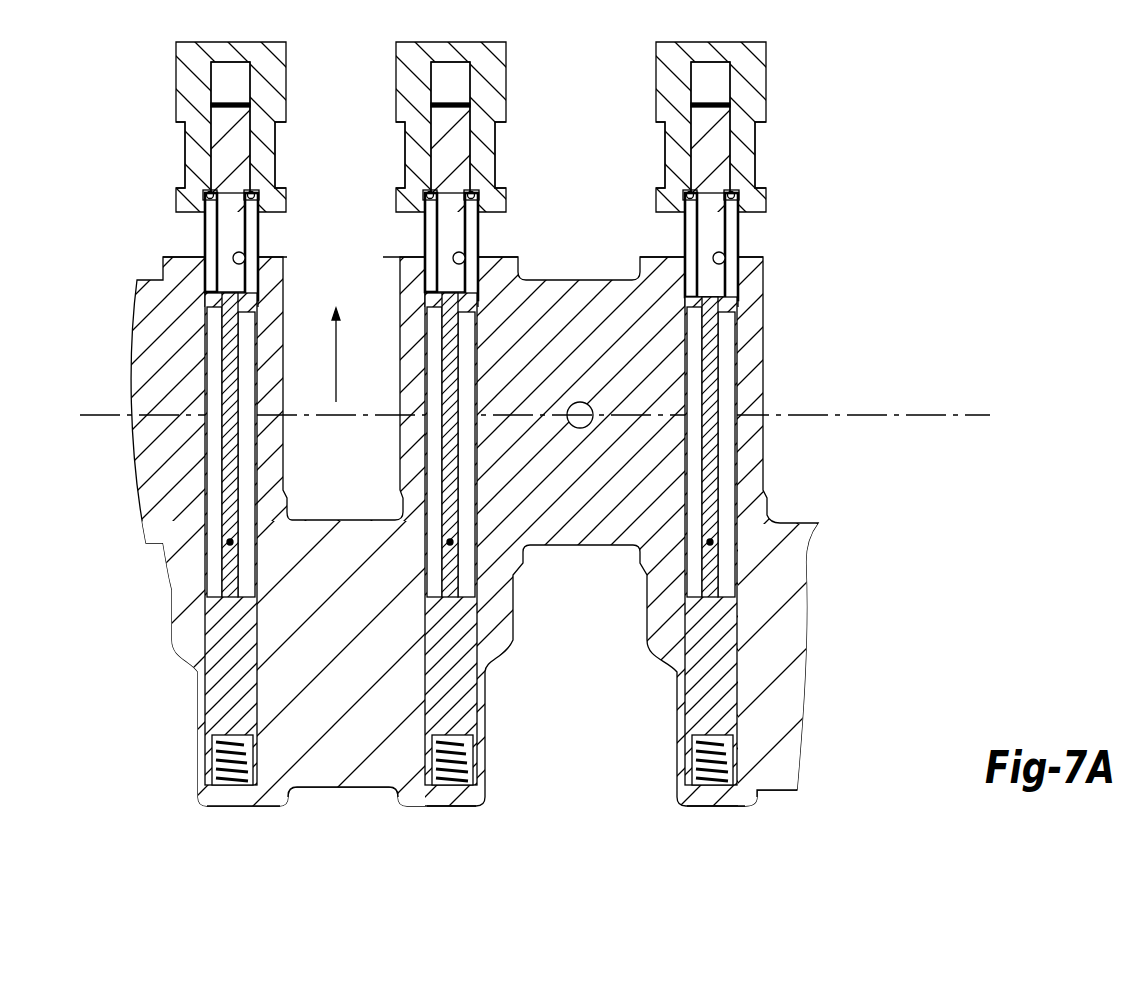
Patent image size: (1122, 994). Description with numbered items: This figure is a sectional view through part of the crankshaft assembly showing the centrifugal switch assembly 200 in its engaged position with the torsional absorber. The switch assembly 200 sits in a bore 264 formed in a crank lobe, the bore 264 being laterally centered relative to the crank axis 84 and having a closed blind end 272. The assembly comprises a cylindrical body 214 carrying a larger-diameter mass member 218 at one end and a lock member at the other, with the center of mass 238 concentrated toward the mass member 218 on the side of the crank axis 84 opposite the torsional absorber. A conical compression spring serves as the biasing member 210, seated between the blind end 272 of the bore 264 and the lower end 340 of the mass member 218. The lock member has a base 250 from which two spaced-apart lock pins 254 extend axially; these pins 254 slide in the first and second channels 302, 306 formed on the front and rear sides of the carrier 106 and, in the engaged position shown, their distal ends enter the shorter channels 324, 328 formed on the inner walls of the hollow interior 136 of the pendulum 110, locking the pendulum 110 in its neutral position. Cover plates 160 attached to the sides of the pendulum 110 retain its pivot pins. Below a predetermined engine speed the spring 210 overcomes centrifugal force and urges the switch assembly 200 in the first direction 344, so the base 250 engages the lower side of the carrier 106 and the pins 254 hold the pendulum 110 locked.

The crank axis 84 is at (873, 413).
The carrier 106 is at (224, 112).
The pendulum 110 is at (298, 65).
The hollow interior 136 is at (240, 96).
The cover plates 160 is at (286, 135).
The centrifugal switch assembly 200 is at (182, 510).
The biasing member 210 is at (430, 762).
The body 214 is at (230, 397).
The mass member 218 is at (200, 668).
The center of mass 238 is at (232, 543).
The base 250 is at (427, 307).
The lock pins 254 is at (210, 240).
The bore 264 is at (205, 488).
The blind end 272 is at (232, 790).
The first carrier channel 302 is at (213, 290).
The second carrier channel 306 is at (254, 268).
The first pendulum channel 324 is at (200, 196).
The second pendulum channel 328 is at (263, 197).
The lower end of mass member 340 is at (215, 752).
The first direction 344 is at (336, 372).